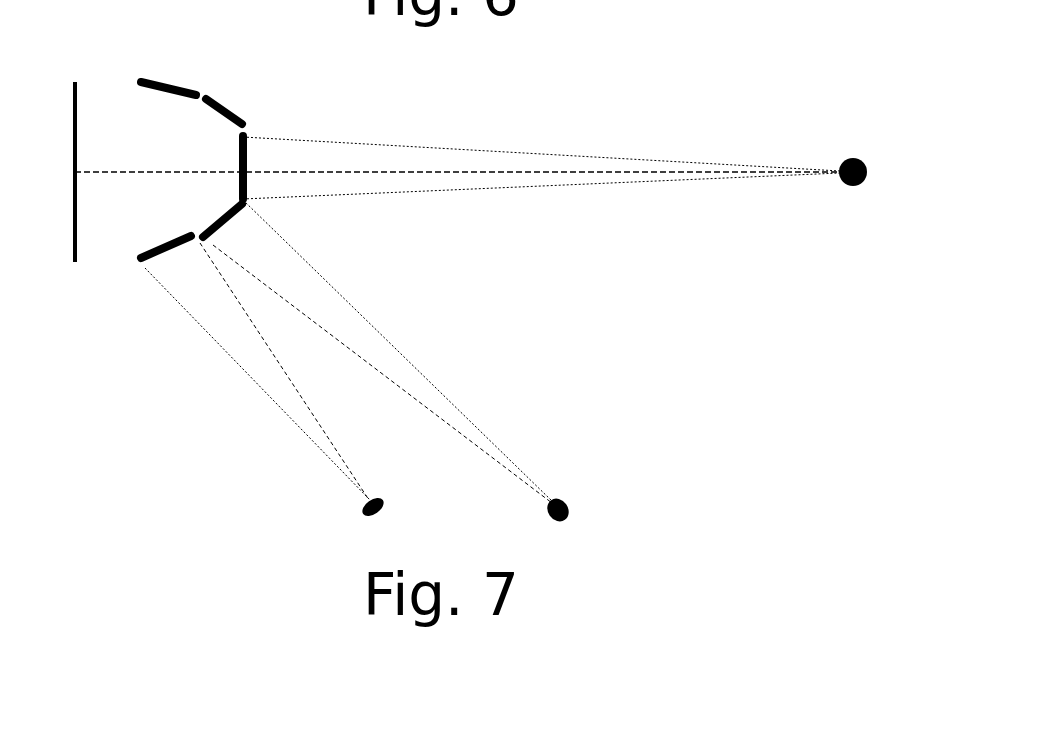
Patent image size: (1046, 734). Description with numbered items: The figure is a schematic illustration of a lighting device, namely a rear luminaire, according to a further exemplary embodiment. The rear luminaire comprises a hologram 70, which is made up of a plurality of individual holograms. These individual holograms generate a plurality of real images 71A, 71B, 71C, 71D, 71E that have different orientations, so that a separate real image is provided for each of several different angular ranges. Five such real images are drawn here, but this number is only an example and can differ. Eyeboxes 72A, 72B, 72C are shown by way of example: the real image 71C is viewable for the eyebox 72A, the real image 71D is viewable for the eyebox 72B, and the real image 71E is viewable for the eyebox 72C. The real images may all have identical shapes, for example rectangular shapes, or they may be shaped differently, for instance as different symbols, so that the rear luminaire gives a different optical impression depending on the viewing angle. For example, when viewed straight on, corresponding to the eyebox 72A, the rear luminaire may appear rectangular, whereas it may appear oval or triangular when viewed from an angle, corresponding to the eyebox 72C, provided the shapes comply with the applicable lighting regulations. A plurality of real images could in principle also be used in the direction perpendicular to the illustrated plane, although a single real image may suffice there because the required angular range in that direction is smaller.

The hologram 70 is at (76, 138).
The real image 71A is at (160, 82).
The real image 71B is at (227, 107).
The real image 71C is at (246, 153).
The real image 71D is at (221, 223).
The real image 71E is at (178, 250).
The eyebox 72A is at (852, 156).
The eyebox 72B is at (569, 500).
The eyebox 72C is at (362, 512).